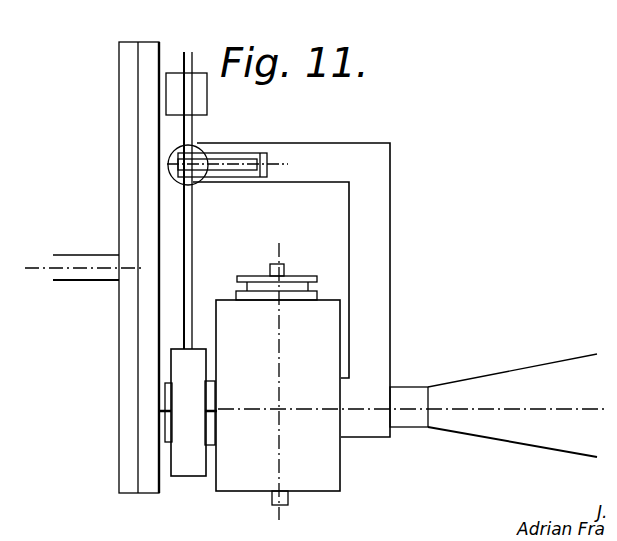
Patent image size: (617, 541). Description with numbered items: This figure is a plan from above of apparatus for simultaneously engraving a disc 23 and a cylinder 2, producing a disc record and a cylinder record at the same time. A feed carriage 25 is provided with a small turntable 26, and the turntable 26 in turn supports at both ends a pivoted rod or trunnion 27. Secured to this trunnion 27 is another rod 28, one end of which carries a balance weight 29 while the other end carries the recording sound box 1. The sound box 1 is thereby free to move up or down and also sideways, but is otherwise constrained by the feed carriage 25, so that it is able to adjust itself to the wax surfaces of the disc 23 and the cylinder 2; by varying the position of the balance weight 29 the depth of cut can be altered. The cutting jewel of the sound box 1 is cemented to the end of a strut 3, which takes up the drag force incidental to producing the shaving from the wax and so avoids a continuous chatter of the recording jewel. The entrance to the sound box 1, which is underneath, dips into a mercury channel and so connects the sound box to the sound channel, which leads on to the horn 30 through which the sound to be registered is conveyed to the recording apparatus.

The sound box 1 is at (188, 477).
The cylinder 2 is at (325, 492).
The strut 3 is at (167, 410).
The disc 23 is at (148, 233).
The feed carriage 25 is at (388, 318).
The turntable 26 is at (203, 152).
The pivoted rod or trunnion 27 is at (240, 171).
The rod 28 is at (185, 315).
The balance weight 29 is at (207, 98).
The horn 30 is at (478, 435).